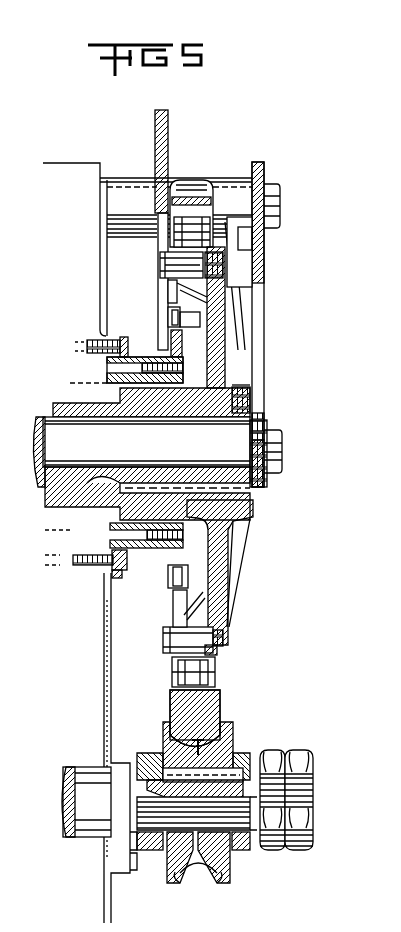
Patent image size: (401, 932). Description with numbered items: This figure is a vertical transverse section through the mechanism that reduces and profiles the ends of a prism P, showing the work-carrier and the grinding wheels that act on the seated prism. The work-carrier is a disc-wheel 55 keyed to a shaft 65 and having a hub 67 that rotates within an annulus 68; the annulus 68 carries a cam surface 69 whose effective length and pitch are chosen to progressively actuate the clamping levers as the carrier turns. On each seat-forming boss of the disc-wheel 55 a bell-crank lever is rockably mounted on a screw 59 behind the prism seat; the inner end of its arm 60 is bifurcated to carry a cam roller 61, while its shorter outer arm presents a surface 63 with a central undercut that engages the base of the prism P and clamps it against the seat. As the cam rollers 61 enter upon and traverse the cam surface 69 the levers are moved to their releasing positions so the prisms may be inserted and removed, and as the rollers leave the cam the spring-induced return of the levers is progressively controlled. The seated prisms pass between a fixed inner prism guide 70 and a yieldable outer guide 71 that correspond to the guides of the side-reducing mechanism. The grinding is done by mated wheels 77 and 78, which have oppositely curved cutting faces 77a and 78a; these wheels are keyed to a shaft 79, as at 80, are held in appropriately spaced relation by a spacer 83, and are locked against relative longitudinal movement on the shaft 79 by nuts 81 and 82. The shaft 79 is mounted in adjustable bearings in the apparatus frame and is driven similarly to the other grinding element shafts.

The fixed inner prism guide 70 is at (168, 128).
The yieldable outer guide 71 is at (262, 317).
The prism P is at (187, 183).
The surface 63 is at (192, 218).
The disc-wheel 55 is at (220, 572).
The screw 59 is at (160, 257).
The arm 60 is at (170, 290).
The cam roller 61 is at (170, 313).
The cam surface 69 is at (136, 356).
The shaft 65 is at (50, 430).
The hub 67 is at (253, 503).
The annulus 68 is at (112, 532).
The spacer 83 is at (227, 753).
The key 80 is at (233, 777).
The shaft 79 is at (140, 810).
The mated wheel 77 is at (170, 863).
The mated wheel 78 is at (228, 855).
The cutting face 77a is at (182, 877).
The cutting face 78a is at (215, 877).
The nut 81 is at (270, 758).
The nut 82 is at (299, 755).